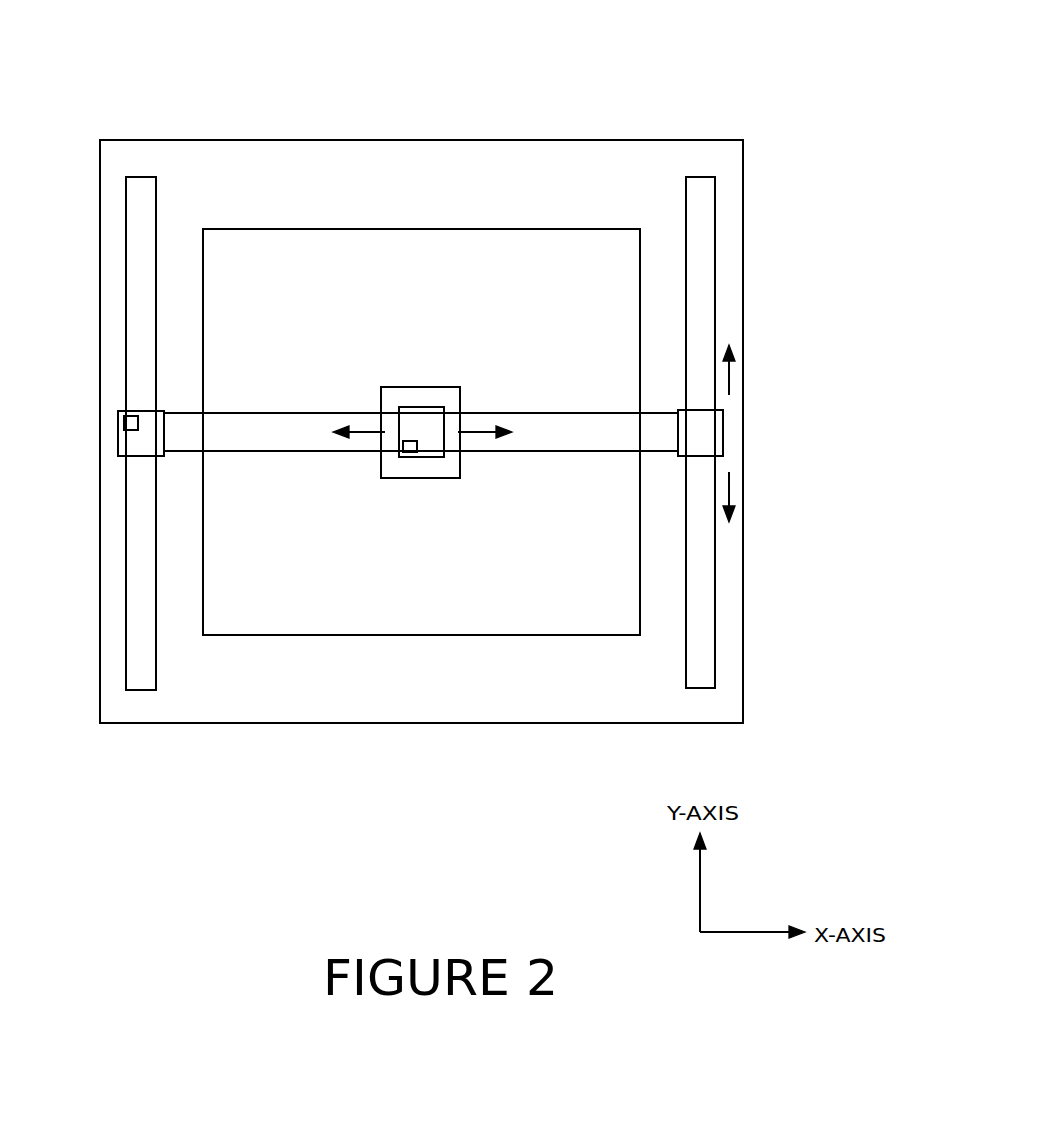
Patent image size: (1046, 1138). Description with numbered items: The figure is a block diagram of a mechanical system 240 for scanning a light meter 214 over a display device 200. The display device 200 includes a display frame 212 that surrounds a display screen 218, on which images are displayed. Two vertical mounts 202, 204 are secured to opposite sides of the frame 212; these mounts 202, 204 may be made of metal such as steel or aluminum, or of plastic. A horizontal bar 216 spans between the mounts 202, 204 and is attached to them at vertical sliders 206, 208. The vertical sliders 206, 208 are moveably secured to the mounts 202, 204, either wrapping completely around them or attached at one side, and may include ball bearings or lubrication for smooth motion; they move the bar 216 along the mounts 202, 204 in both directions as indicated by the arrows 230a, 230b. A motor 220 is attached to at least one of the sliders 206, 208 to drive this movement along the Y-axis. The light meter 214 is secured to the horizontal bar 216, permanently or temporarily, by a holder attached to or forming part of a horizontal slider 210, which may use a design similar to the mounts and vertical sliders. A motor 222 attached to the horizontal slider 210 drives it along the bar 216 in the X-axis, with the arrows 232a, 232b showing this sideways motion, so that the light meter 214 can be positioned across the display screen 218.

The display device 200 is at (664, 100).
The vertical mount 202 is at (126, 238).
The vertical mount 204 is at (716, 213).
The vertical slider 206 is at (118, 440).
The vertical slider 208 is at (723, 432).
The horizontal slider 210 is at (415, 407).
The display frame 212 is at (505, 157).
The light meter 214 is at (462, 400).
The horizontal bar 216 is at (598, 430).
The display screen 218 is at (324, 615).
The motor 220 is at (119, 415).
The motor 222 is at (410, 452).
The arrow 230a is at (735, 375).
The arrow 230b is at (735, 490).
The arrow 232a is at (365, 433).
The arrow 232b is at (478, 435).
The mechanical system 240 is at (137, 168).